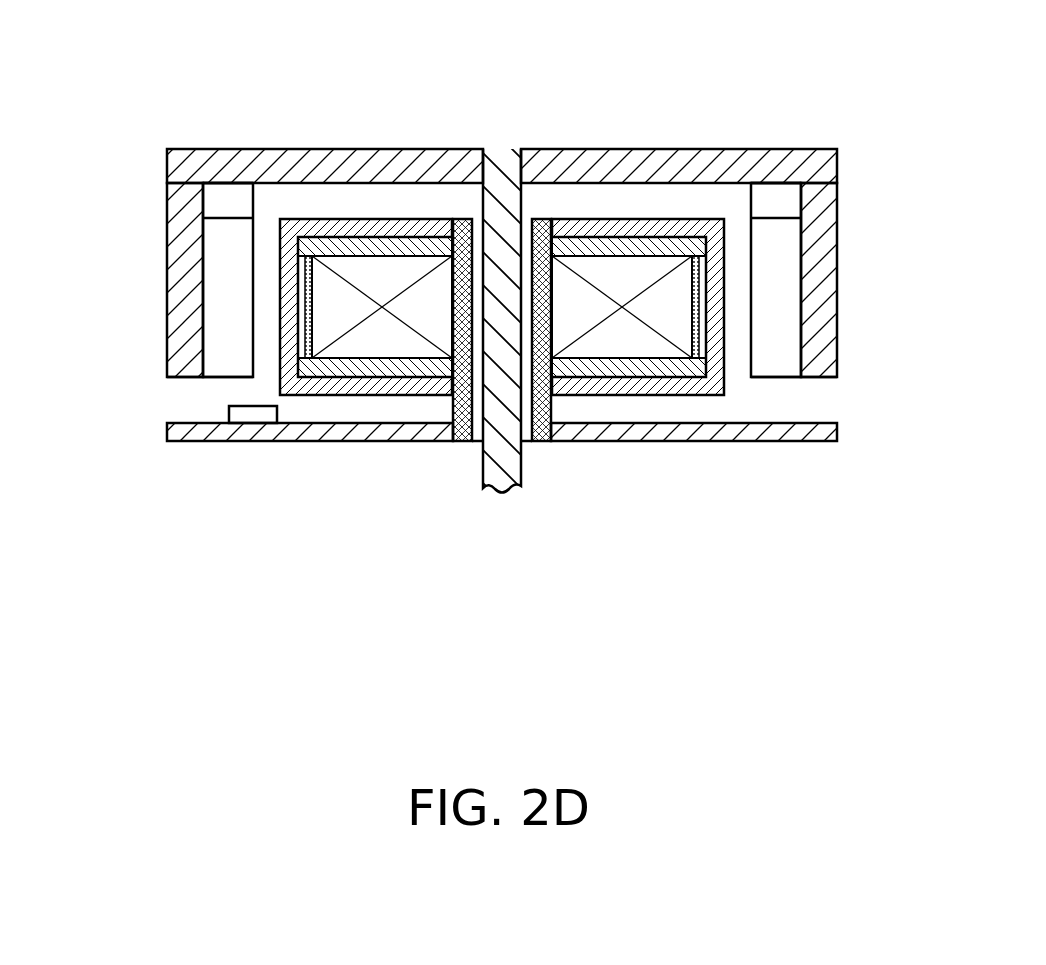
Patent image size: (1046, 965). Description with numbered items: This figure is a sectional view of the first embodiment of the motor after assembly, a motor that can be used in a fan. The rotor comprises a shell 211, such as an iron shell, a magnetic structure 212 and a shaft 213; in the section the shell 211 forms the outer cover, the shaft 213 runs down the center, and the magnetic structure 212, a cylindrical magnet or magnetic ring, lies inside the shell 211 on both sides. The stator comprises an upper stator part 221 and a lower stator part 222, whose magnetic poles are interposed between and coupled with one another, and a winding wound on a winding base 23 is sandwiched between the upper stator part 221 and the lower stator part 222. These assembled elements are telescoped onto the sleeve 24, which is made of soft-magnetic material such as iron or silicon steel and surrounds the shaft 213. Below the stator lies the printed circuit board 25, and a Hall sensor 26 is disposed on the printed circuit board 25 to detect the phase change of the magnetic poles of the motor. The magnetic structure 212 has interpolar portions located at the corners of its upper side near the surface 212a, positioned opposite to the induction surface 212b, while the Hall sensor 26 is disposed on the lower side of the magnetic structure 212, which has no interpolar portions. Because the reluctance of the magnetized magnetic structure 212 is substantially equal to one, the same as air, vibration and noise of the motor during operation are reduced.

The shell 211 is at (328, 167).
The magnetic structure 212 is at (222, 292).
The surface 212a is at (243, 177).
The induction surface 212b is at (213, 378).
The shaft 213 is at (507, 167).
The upper stator part 221 is at (442, 223).
The lower stator part 222 is at (387, 387).
The winding base 23 is at (393, 253).
The sleeve 24 is at (460, 440).
The printed circuit board 25 is at (318, 433).
The Hall sensor 26 is at (256, 415).